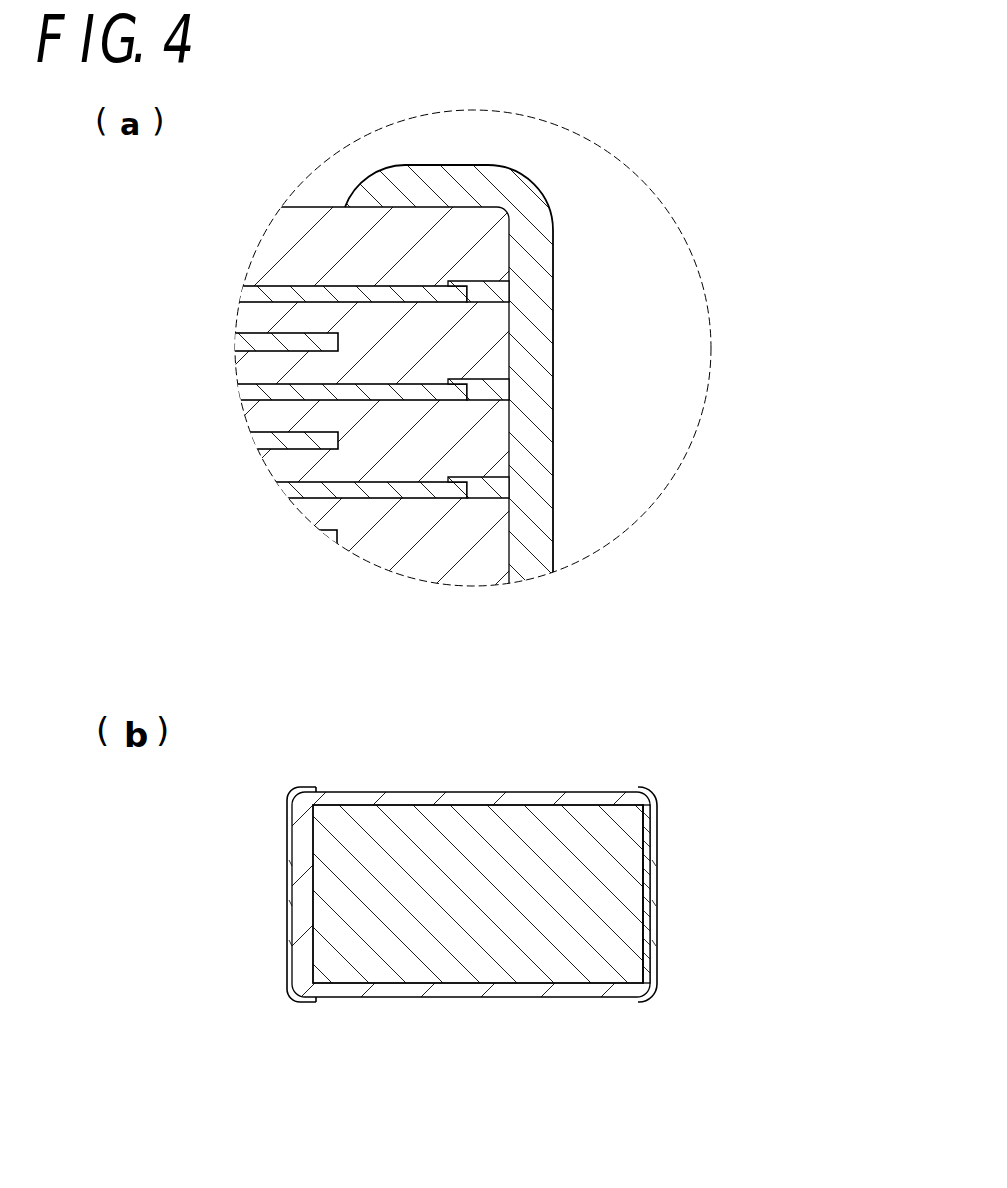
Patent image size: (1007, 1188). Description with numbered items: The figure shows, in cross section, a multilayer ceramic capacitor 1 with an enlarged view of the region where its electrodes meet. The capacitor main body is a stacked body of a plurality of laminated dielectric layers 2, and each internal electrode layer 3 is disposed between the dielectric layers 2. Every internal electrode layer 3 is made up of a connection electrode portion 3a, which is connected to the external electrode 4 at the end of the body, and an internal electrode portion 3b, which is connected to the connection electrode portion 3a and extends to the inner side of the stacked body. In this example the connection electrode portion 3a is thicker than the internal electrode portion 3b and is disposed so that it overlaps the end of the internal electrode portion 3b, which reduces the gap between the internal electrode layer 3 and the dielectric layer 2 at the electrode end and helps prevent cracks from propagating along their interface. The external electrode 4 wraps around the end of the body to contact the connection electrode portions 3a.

The multilayer ceramic capacitor 1 is at (626, 784).
The dielectric layer 2 is at (343, 328).
The internal electrode layer 3 is at (478, 845).
The connection electrode portion 3a is at (484, 292).
The internal electrode portion 3b is at (368, 298).
The external electrode 4 is at (533, 280).